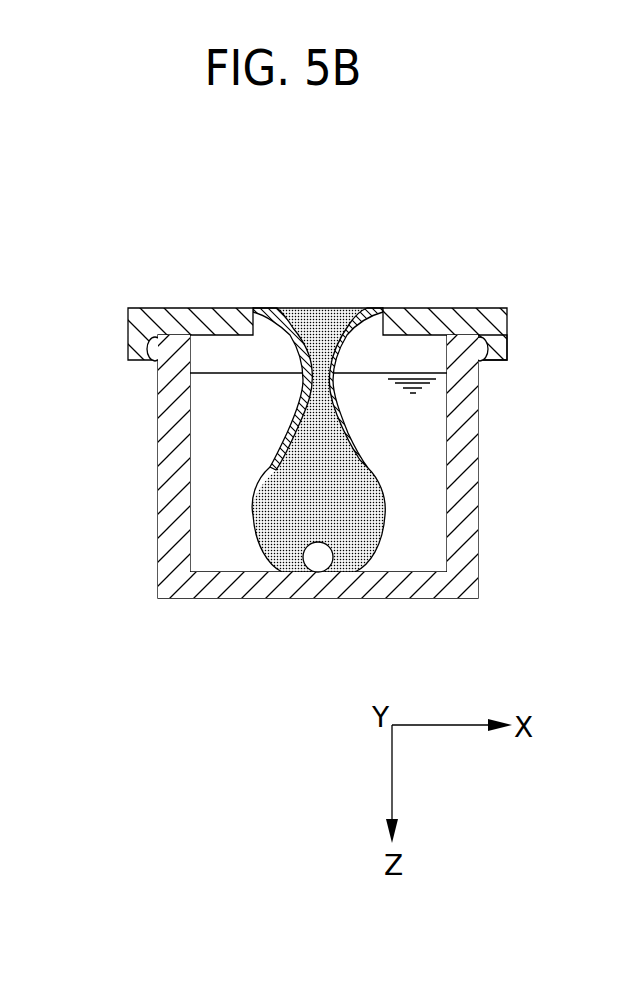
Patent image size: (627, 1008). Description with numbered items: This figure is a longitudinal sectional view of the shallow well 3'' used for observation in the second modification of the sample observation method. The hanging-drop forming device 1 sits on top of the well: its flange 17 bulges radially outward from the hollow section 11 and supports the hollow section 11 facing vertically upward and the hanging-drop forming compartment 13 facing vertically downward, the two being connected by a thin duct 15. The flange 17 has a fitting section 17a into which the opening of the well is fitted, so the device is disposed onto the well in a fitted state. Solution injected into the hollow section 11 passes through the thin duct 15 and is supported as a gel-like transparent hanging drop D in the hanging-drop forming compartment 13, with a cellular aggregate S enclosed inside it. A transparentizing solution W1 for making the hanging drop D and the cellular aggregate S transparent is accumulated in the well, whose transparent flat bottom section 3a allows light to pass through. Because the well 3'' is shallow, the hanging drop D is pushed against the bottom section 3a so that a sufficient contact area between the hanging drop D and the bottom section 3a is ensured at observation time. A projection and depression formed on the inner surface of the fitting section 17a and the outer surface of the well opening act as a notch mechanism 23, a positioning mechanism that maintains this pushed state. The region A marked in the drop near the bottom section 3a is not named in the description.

The hanging-drop forming device 1 is at (160, 250).
The shallow well 3'' is at (279, 518).
The bottom section 3a is at (388, 592).
The hollow section 11 is at (263, 308).
The hanging-drop forming compartment 13 is at (288, 433).
The thin duct 15 is at (300, 395).
The flange 17 is at (432, 315).
The fitting section 17a is at (500, 337).
The notch mechanism 23 is at (494, 375).
The transparentizing solution W1 is at (208, 505).
The liquid accumulation region A is at (275, 535).
The cellular aggregate S is at (318, 563).
The hanging drop D is at (402, 505).